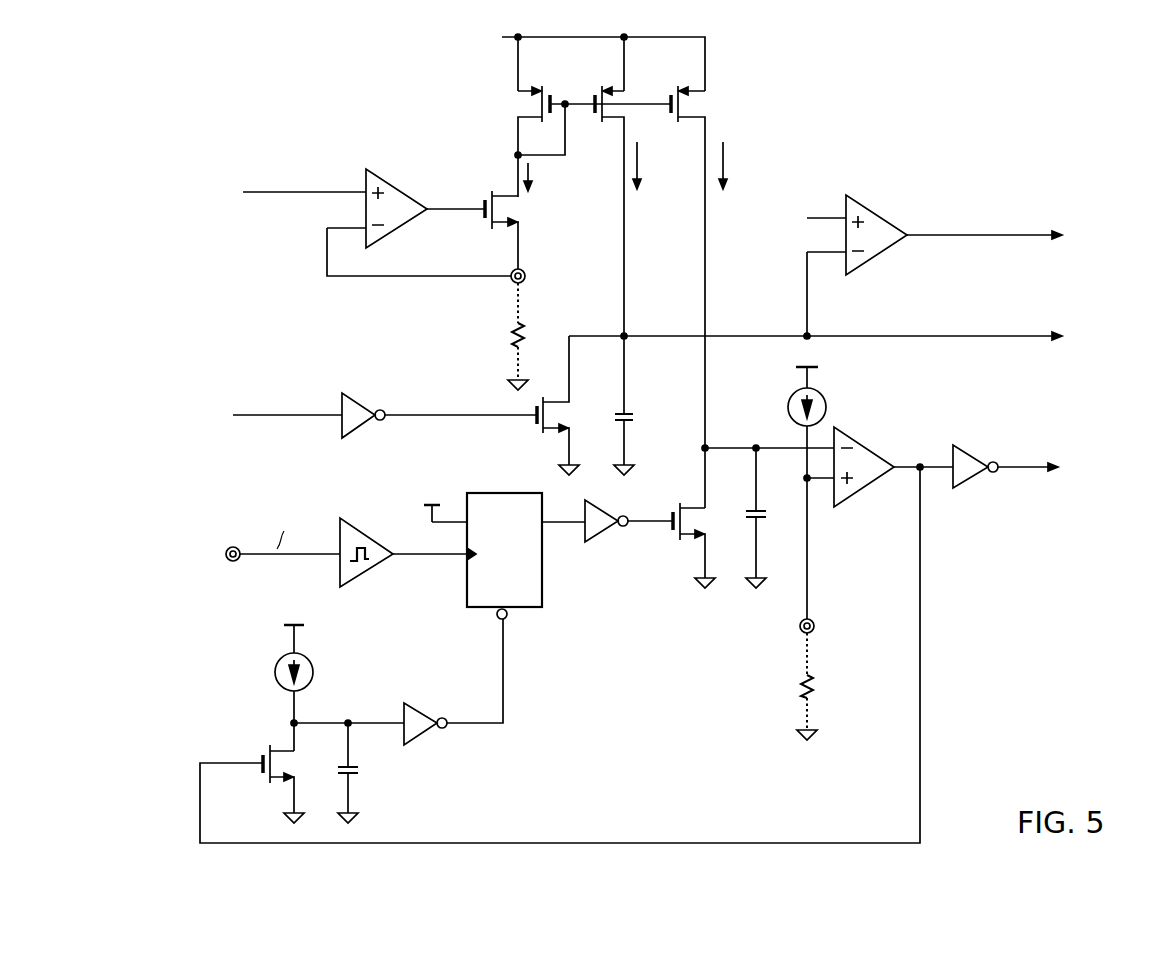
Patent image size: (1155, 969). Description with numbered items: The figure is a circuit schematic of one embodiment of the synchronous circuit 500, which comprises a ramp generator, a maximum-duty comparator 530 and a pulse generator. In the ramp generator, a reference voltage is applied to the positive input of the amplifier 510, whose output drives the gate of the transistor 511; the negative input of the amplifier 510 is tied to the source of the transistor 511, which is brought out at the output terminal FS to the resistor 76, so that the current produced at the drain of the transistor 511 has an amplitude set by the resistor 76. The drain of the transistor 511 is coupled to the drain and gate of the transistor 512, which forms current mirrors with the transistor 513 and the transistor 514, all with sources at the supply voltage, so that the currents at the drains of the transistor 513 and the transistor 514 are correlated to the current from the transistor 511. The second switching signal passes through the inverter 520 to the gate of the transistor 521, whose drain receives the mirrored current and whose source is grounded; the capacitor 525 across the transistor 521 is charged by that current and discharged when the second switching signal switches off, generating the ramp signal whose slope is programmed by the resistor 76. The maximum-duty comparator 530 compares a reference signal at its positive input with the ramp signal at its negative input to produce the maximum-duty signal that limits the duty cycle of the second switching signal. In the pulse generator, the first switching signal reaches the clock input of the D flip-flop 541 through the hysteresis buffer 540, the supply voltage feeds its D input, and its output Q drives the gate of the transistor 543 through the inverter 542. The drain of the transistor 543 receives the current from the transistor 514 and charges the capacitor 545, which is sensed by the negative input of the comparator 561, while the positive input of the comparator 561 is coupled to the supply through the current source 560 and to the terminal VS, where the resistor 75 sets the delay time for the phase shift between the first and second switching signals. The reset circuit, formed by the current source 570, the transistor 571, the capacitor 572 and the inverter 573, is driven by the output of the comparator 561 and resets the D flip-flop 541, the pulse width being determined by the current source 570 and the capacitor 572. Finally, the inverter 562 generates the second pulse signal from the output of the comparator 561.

The synchronous circuit 500 is at (656, 434).
The amplifier 510 is at (357, 218).
The transistor 511 is at (519, 230).
The transistor 512 is at (577, 141).
The transistor 513 is at (631, 238).
The transistor 514 is at (712, 285).
The inverter 520 is at (370, 409).
The transistor 521 is at (571, 405).
The capacitor 525 is at (645, 440).
The maximum-duty comparator 530 is at (934, 265).
The hysteresis buffer 540 is at (403, 548).
The D flip-flop 541 is at (501, 543).
The inverter 542 is at (629, 531).
The transistor 543 is at (708, 545).
The capacitor 545 is at (776, 518).
The current source 560 is at (787, 479).
The comparator 561 is at (576, 632).
The inverter 562 is at (1033, 456).
The current source 570 is at (317, 675).
The transistor 571 is at (297, 784).
The capacitor 572 is at (367, 773).
The inverter 573 is at (453, 689).
The resistor 75 is at (792, 686).
The resistor 76 is at (504, 336).